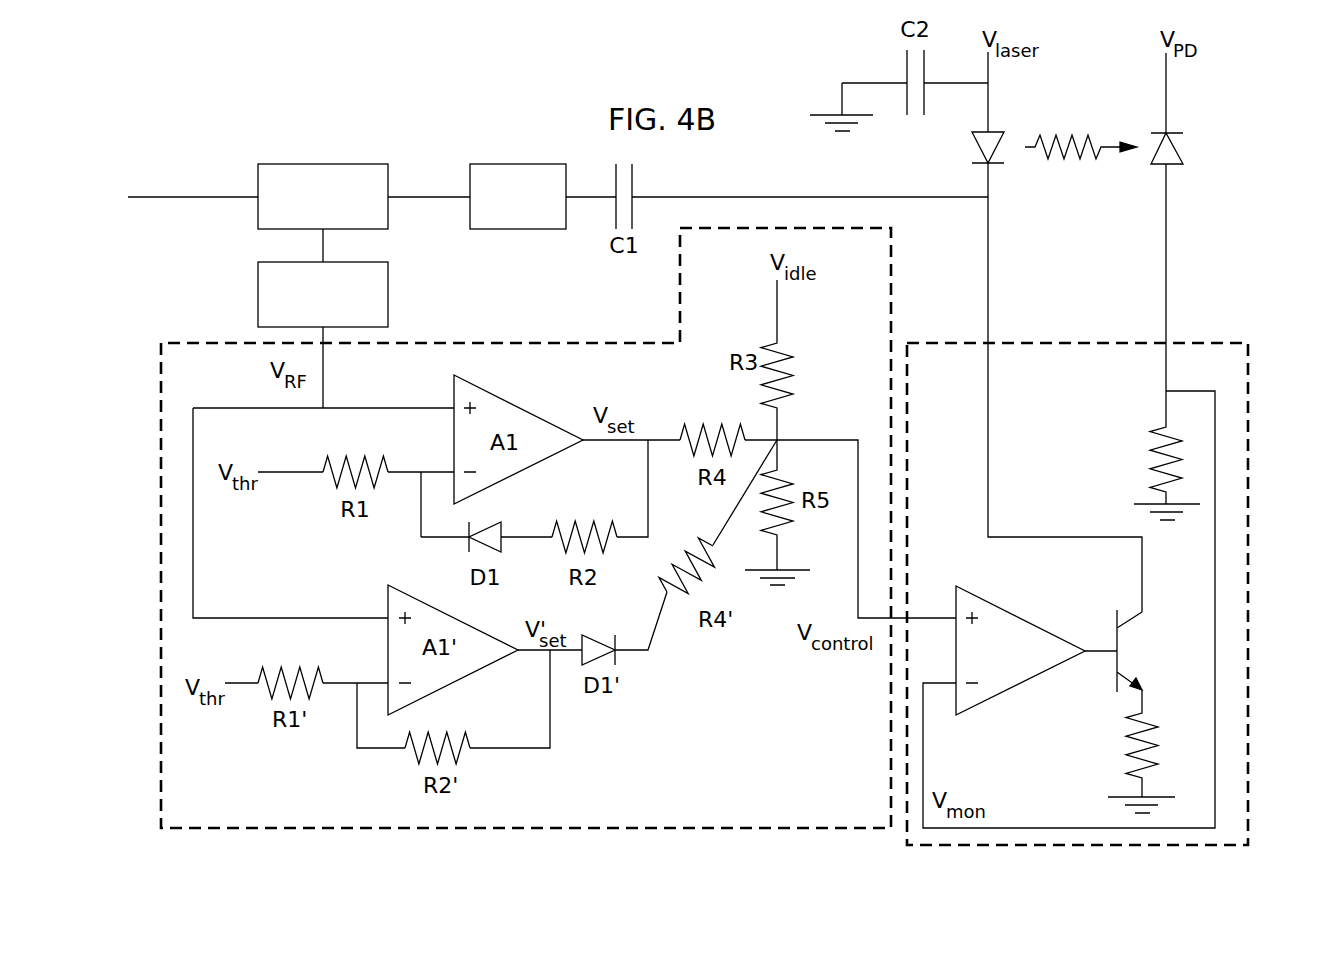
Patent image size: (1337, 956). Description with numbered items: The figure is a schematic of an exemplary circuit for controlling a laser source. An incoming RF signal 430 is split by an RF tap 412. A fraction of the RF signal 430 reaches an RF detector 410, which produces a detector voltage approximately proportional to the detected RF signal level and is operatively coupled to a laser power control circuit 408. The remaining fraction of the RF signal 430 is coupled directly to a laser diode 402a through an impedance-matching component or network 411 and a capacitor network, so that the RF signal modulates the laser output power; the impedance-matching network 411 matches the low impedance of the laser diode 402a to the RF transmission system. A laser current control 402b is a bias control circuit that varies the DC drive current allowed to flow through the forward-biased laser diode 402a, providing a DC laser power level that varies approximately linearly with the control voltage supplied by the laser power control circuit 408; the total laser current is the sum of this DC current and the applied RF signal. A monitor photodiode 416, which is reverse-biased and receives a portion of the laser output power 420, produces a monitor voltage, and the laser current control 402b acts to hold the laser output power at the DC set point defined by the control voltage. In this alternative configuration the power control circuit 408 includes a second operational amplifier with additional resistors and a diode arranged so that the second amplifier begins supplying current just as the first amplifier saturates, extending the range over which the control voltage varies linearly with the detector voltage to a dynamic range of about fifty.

The RF signal 430 is at (188, 188).
The RF tap 412 is at (323, 196).
The impedance-matching component or network 411 is at (518, 196).
The RF detector 410 is at (323, 294).
The laser power control circuit 408 is at (583, 340).
The laser diode 402a is at (985, 140).
The laser output power 420 is at (1087, 126).
The monitor photodiode 416 is at (1162, 148).
The laser current control 402b is at (1248, 700).